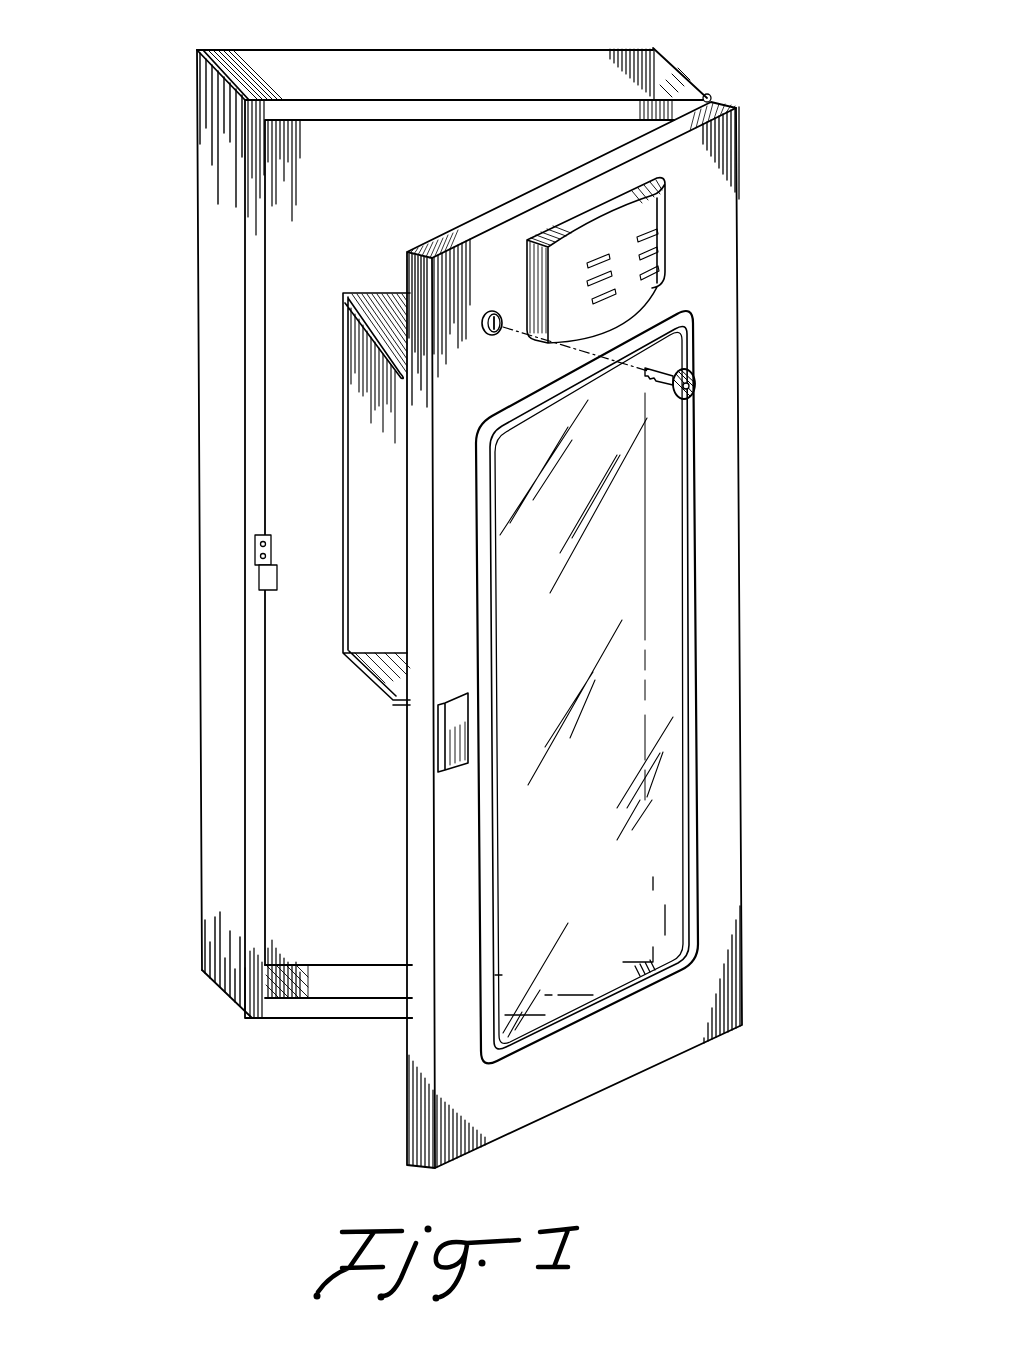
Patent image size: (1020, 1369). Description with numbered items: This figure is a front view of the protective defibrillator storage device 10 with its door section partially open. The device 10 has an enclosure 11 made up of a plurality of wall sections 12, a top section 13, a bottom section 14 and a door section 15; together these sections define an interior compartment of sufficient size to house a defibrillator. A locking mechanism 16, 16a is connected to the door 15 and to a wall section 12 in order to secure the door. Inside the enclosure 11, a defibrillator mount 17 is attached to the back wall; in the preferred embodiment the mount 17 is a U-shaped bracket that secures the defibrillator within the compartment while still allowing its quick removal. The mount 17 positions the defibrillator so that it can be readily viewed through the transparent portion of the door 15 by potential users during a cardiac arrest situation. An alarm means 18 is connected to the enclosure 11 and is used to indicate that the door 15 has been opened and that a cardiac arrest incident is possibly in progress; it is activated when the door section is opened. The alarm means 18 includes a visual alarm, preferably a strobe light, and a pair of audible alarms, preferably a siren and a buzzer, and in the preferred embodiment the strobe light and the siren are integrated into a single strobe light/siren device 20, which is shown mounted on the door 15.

The protective defibrillator storage device 10 is at (364, 47).
The enclosure 11 is at (200, 432).
The wall sections 12 is at (222, 708).
The top section 13 is at (276, 72).
The bottom section 14 is at (325, 982).
The door section 15 is at (565, 635).
The locking mechanism 16 is at (450, 747).
The locking mechanism 16a is at (258, 577).
The defibrillator mount 17 is at (343, 489).
The alarm means 18 is at (665, 288).
The strobe light/siren device 20 is at (665, 207).